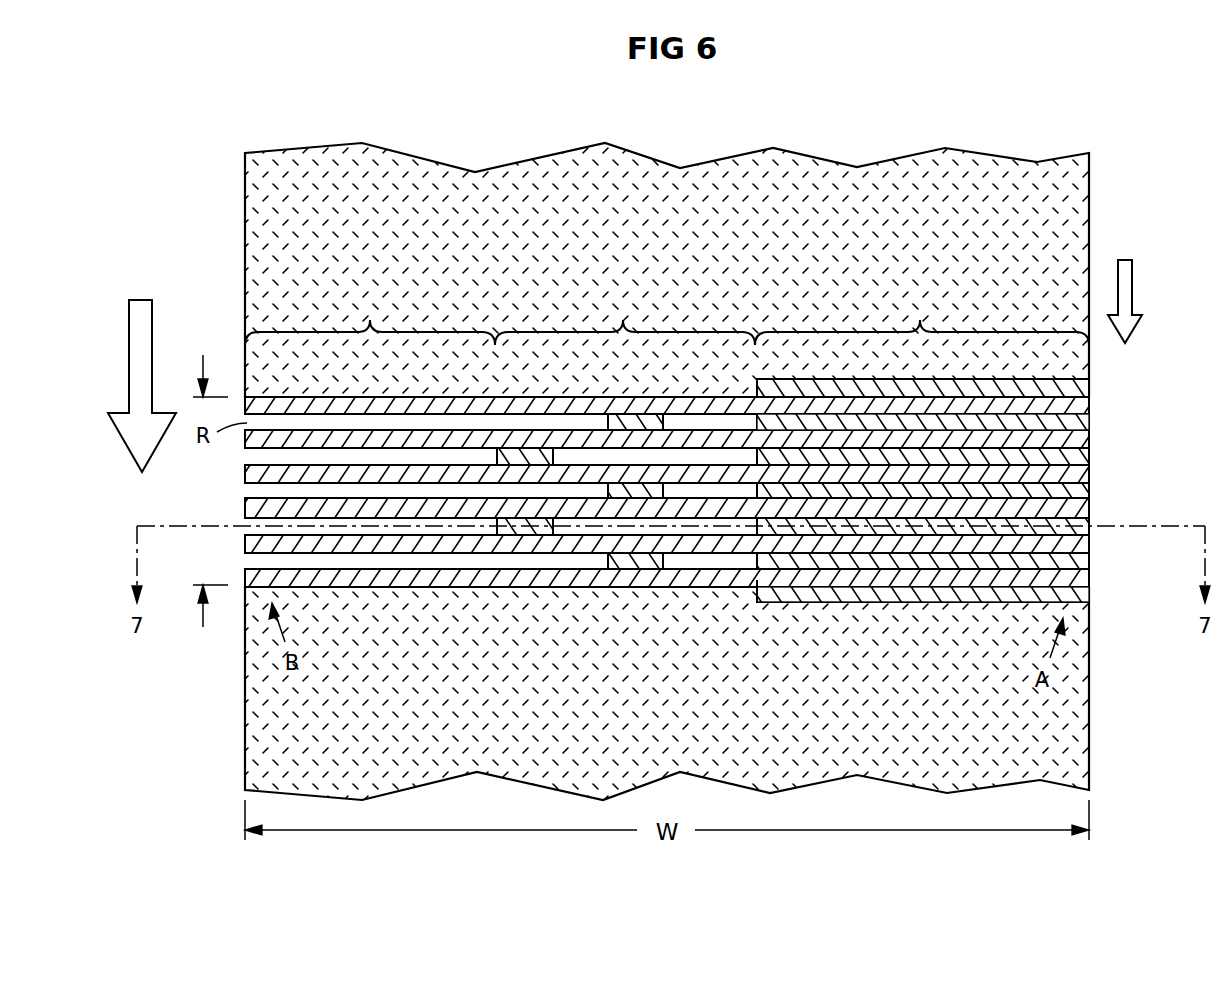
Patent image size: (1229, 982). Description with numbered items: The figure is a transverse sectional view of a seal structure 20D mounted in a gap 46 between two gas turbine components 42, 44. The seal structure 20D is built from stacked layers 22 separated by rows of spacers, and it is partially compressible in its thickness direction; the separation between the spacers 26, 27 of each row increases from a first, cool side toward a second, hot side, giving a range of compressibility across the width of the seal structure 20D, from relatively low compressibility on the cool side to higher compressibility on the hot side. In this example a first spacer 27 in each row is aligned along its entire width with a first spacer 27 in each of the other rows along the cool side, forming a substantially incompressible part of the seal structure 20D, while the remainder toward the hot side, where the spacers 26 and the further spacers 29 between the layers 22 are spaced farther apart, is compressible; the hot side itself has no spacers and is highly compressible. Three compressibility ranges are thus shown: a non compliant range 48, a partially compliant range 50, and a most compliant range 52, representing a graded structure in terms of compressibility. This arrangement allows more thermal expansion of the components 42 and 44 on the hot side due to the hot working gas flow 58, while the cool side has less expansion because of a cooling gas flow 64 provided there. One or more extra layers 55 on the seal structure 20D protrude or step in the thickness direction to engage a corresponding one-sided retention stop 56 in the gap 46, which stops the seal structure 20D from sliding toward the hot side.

The gas turbine component 42 is at (1089, 199).
The gas turbine component 44 is at (1089, 703).
The conductive layers 22 is at (1089, 405).
The first spacer 27 is at (1089, 423).
The extra layer 55 is at (1089, 600).
The spacer 26 is at (636, 560).
The connecting segments 29 is at (428, 557).
The retention stop 56 is at (777, 603).
The non compliant range 48 is at (922, 413).
The partially compliant range 50 is at (625, 284).
The most compliant range 52 is at (370, 284).
The hot working gas flow 58 is at (152, 320).
The cooling gas flow 64 is at (1132, 293).
The seal structure 20D is at (1108, 487).
The gap 46 is at (209, 636).